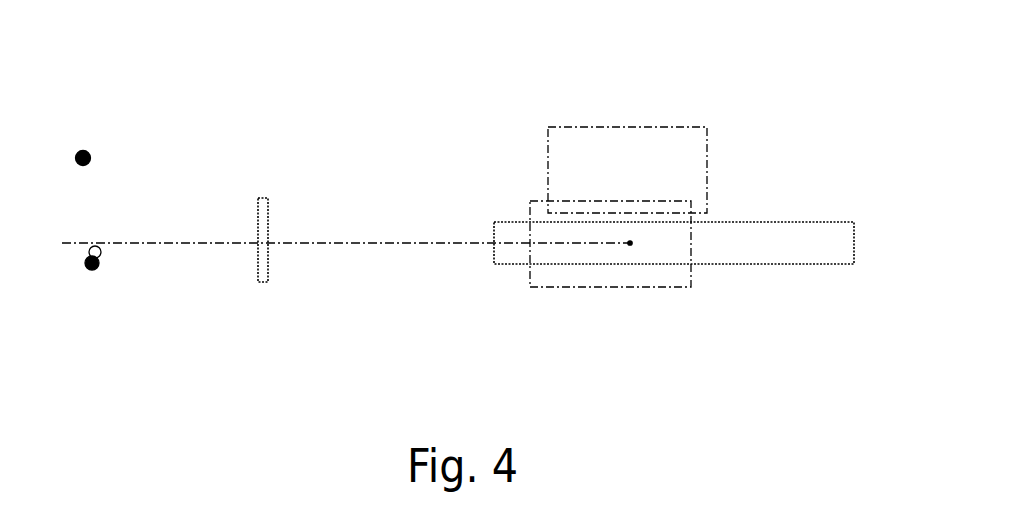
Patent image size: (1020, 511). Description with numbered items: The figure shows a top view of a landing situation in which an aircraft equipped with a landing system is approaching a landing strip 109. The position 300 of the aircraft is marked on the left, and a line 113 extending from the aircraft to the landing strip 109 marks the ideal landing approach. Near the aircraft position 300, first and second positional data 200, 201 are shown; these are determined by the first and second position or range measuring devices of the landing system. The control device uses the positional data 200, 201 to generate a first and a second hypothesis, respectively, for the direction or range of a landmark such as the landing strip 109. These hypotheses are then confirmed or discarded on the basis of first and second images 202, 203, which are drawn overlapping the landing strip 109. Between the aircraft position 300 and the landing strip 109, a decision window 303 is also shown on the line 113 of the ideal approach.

The landing strip 109 is at (836, 245).
The line marking the ideal landing approach 113 is at (392, 245).
The first positional data 200 is at (88, 272).
The second positional data 201 is at (91, 155).
The first image 202 is at (628, 277).
The second image 203 is at (628, 148).
The position of an aircraft 300 is at (101, 255).
The decision window 303 is at (263, 212).